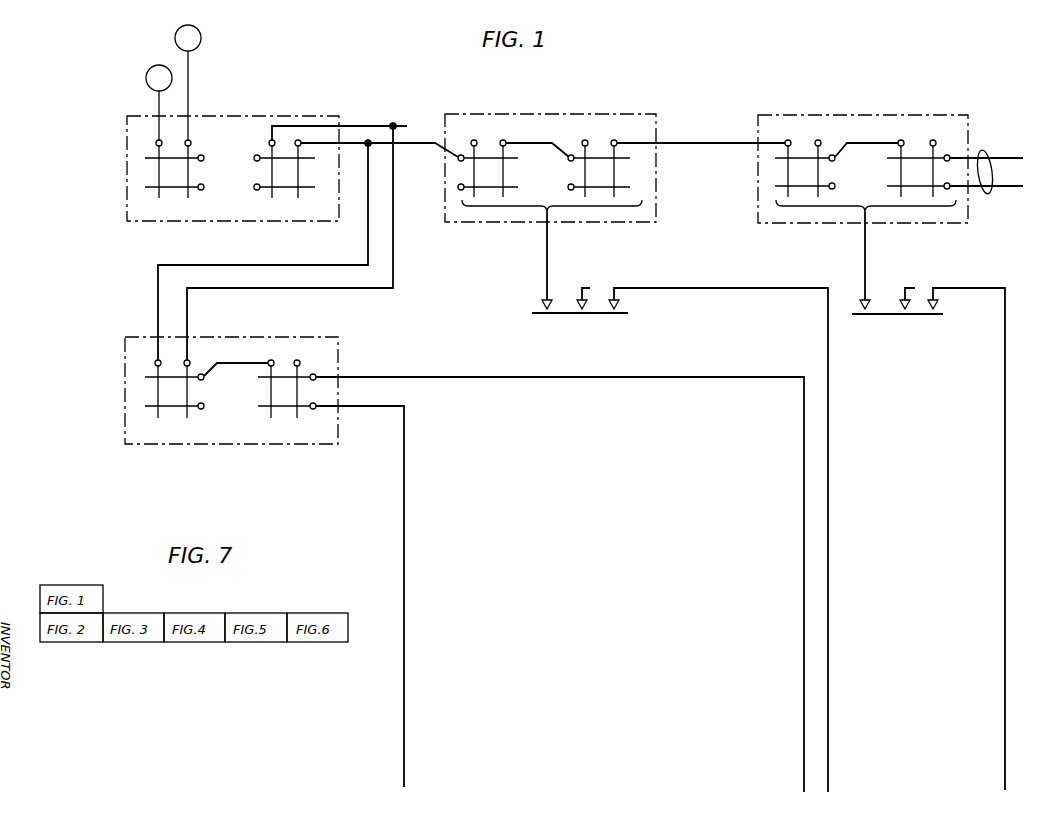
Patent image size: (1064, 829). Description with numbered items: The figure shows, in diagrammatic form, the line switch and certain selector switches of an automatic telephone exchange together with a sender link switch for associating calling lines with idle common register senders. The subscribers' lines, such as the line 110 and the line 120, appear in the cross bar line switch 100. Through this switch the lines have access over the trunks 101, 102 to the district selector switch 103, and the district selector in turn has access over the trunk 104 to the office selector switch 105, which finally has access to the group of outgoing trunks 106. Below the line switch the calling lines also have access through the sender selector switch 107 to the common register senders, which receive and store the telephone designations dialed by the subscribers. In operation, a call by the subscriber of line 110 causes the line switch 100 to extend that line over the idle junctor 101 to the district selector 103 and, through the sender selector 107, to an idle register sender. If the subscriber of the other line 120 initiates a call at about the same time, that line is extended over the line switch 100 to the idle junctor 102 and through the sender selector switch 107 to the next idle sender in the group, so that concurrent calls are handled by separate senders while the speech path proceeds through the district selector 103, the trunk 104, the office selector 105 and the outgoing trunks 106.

The cross bar line switch 100 is at (251, 222).
The trunk 101 is at (351, 142).
The trunk 102 is at (393, 125).
The district selector switch 103 is at (520, 222).
The trunk 104 is at (718, 143).
The office selector switch 105 is at (829, 223).
The outgoing trunk group 106 is at (988, 162).
The sender selector switch 107 is at (338, 350).
The subscriber line 110 is at (158, 99).
The subscriber line 120 is at (190, 101).